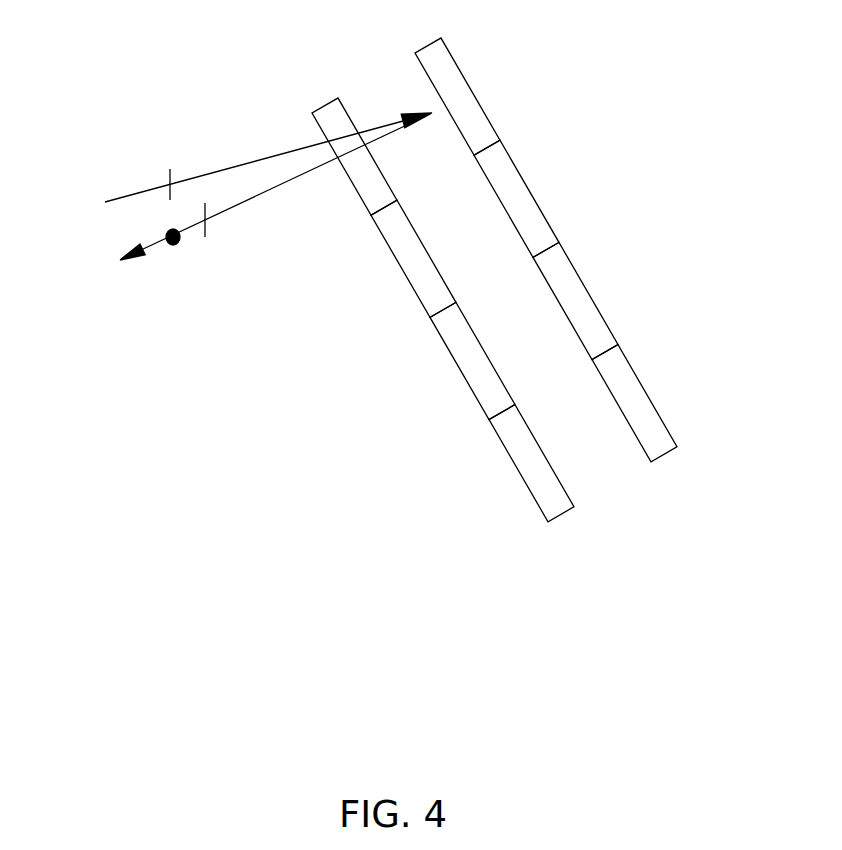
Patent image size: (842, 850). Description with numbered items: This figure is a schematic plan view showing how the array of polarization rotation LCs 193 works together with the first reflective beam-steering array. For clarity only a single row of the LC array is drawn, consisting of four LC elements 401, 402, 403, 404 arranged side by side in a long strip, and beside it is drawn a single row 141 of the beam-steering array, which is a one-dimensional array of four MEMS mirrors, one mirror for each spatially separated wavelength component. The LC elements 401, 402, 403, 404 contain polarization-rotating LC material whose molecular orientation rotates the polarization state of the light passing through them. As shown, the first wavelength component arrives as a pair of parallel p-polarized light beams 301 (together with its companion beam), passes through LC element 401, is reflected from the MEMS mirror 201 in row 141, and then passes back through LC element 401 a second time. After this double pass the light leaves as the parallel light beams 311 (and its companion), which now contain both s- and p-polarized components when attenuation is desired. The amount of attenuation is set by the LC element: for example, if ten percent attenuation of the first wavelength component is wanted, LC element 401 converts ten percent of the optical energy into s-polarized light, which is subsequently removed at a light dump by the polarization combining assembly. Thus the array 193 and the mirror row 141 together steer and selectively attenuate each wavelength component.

The top row 141 is at (574, 301).
The array of polarization rotation LCs 193 is at (458, 314).
The MEMS mirror 201 is at (468, 88).
The parallel light beam 301 is at (247, 150).
The parallel light beam 311 is at (273, 214).
The LC element 401 is at (352, 118).
The LC element 402 is at (420, 238).
The LC element 403 is at (477, 337).
The LC element 404 is at (538, 450).